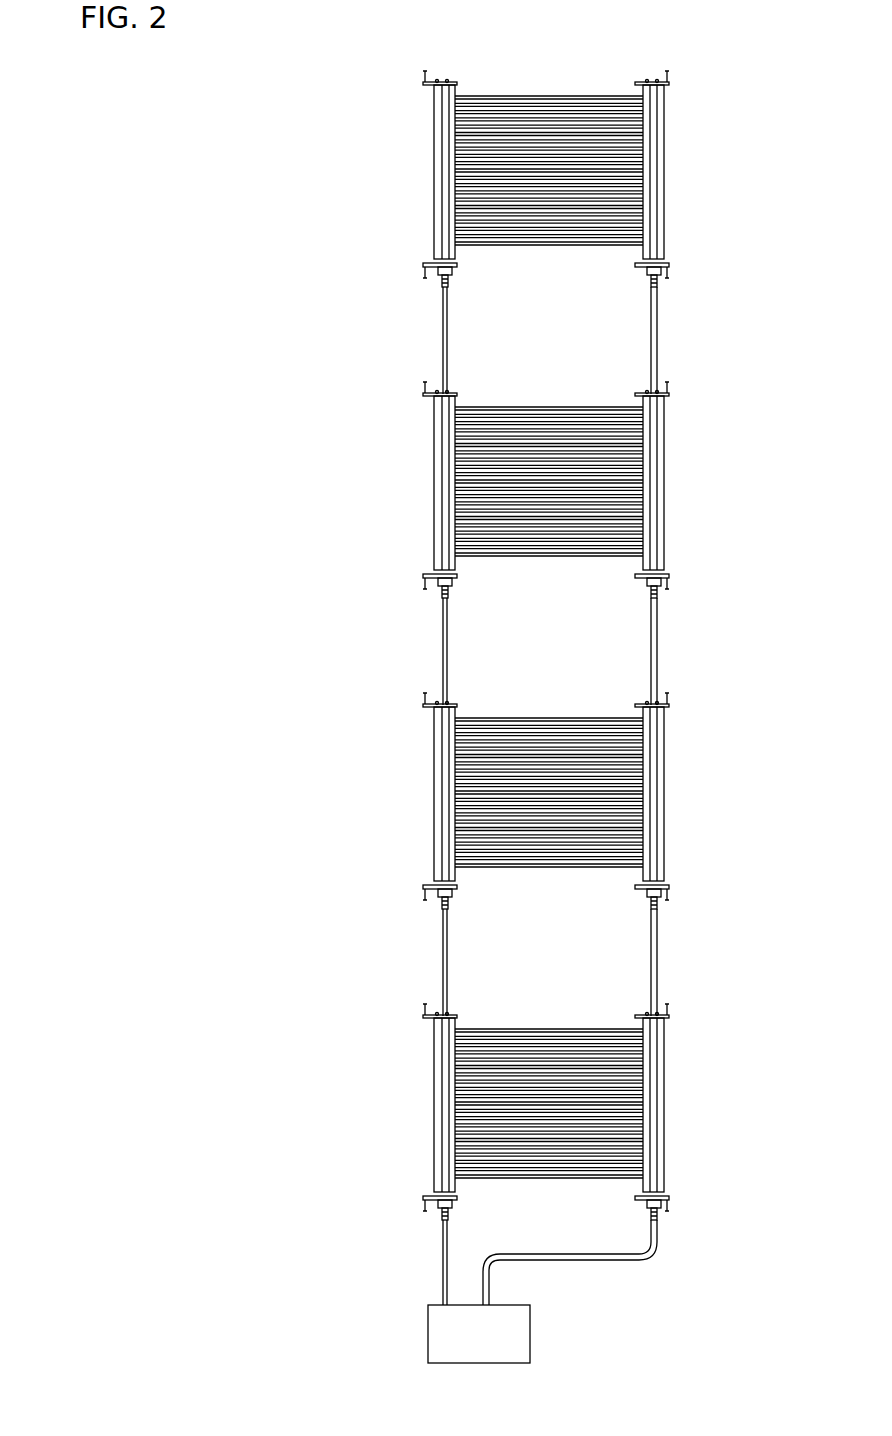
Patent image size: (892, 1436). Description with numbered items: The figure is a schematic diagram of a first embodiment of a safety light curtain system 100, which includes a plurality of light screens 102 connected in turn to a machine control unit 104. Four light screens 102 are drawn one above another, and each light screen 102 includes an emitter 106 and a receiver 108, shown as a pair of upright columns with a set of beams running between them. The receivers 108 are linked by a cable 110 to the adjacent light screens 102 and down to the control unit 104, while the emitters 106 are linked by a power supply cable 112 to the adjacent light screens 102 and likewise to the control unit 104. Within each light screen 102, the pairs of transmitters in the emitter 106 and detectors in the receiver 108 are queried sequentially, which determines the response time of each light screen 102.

The safety light curtain system 100 is at (333, 495).
The light screen 102 is at (556, 645).
The machine control unit 104 is at (430, 1340).
The emitter 106 is at (663, 200).
The receiver 108 is at (433, 172).
The cable 110 is at (444, 364).
The power supply cable 112 is at (656, 323).